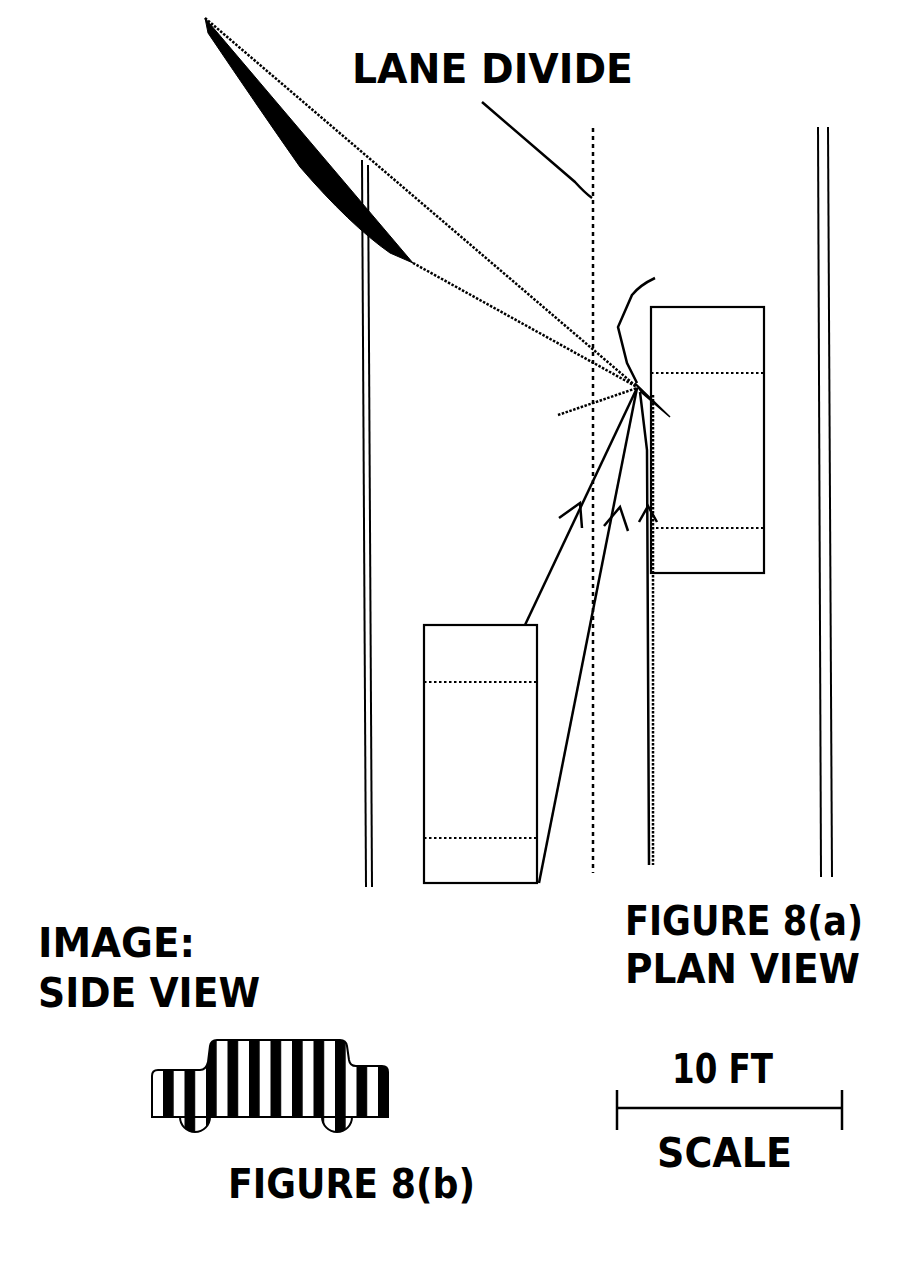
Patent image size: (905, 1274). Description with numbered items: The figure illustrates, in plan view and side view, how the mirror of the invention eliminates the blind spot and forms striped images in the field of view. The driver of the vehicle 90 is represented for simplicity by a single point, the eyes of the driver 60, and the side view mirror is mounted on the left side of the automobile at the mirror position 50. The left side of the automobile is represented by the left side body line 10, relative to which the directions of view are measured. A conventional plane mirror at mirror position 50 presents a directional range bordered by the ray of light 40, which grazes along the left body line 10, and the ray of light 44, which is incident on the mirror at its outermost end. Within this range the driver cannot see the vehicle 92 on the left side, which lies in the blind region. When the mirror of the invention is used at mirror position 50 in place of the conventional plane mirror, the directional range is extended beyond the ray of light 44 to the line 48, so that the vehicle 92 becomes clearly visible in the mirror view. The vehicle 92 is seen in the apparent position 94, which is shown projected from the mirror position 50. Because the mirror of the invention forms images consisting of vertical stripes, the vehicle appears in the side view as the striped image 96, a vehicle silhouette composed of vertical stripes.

In FIG. 8A, the left side body line 10 is at (652, 715).
In FIG. 8A, the ray of light 40 is at (647, 663).
In FIG. 8A, the ray of light 44 is at (608, 573).
In FIG. 8A, the line 48 is at (550, 568).
In FIG. 8A, the mirror position 50 is at (649, 309).
In FIG. 8A, the eyes of the driver 60 is at (675, 415).
In FIG. 8A, the vehicle 90 is at (717, 305).
In FIG. 8A, the vehicle 92 is at (482, 625).
In FIG. 8A, the apparent position 94 is at (288, 140).
In FIG. 8B, the striped image 96 is at (225, 1042).